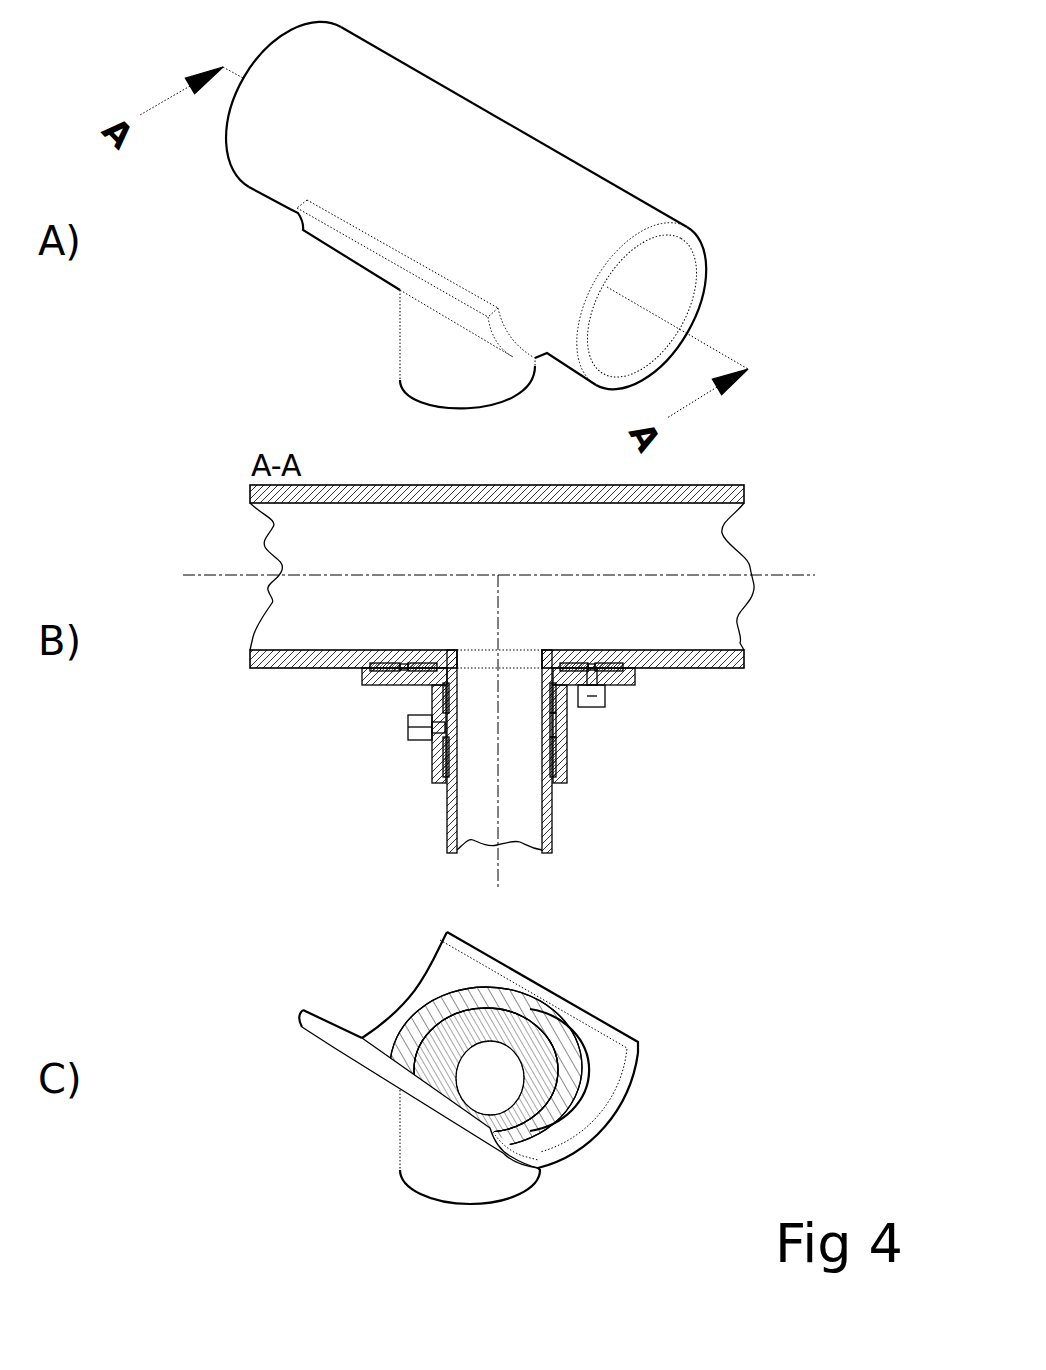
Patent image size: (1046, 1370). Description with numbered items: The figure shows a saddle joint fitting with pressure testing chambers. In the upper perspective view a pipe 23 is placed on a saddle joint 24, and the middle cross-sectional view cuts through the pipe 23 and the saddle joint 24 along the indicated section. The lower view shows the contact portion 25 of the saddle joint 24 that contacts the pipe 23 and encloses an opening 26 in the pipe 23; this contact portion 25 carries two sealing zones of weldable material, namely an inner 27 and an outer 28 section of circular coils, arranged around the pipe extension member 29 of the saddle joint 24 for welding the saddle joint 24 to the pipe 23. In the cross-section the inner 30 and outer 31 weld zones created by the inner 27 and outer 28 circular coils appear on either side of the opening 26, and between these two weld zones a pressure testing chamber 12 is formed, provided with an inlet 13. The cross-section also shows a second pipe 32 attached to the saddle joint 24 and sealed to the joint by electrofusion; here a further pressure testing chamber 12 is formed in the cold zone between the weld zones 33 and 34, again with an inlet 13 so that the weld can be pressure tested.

The pressure testing chamber 12 is at (593, 660).
The inlet 13 is at (596, 700).
The pipe 23 is at (535, 168).
The saddle joint 24 is at (305, 232).
The contact portion 25 is at (450, 970).
The opening 26 is at (508, 648).
The inner section of circular coils 27 is at (530, 1037).
The outer section of circular coils 28 is at (567, 1100).
The pipe extension member 29 is at (423, 1152).
The inner weld zone 30 is at (570, 660).
The outer weld zone 31 is at (617, 671).
The second pipe 32 is at (555, 830).
The weld zone 33 is at (556, 705).
The weld zone 34 is at (556, 750).